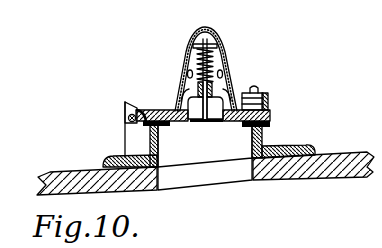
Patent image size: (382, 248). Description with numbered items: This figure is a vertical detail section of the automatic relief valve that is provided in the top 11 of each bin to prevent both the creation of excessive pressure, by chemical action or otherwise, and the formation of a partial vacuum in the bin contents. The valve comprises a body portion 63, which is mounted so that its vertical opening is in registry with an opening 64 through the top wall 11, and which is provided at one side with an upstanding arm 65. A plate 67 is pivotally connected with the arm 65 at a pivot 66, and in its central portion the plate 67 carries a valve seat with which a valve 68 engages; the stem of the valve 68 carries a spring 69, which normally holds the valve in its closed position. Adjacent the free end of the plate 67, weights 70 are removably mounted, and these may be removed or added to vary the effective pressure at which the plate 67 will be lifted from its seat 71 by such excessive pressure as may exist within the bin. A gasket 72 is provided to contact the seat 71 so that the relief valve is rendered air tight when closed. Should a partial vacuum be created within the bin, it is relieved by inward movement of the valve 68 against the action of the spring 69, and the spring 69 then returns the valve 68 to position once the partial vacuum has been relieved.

The top 11 is at (350, 181).
The body portion 63 is at (261, 143).
The opening 64 is at (184, 174).
The upstanding arm 65 is at (125, 134).
The pivot connection 66 is at (122, 115).
The plate 67 is at (237, 101).
The valve 68 is at (210, 123).
The spring 69 is at (211, 50).
The weights 70 is at (267, 94).
The seat 71 is at (250, 125).
The gasket 72 is at (244, 125).